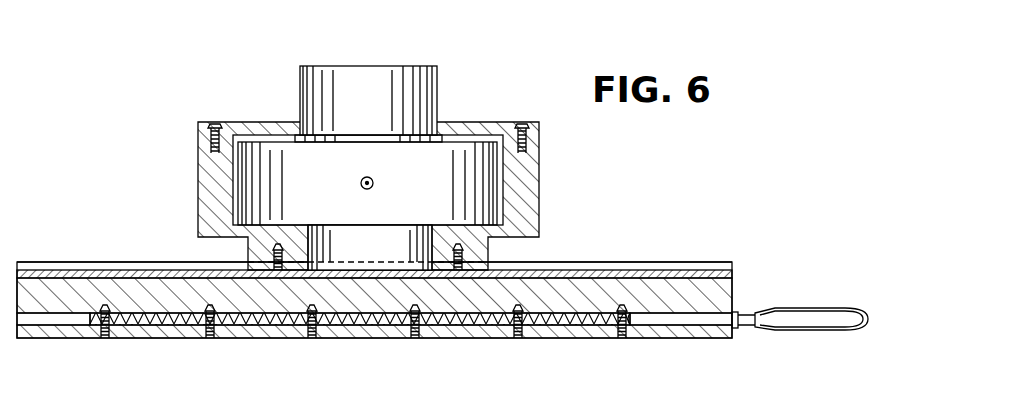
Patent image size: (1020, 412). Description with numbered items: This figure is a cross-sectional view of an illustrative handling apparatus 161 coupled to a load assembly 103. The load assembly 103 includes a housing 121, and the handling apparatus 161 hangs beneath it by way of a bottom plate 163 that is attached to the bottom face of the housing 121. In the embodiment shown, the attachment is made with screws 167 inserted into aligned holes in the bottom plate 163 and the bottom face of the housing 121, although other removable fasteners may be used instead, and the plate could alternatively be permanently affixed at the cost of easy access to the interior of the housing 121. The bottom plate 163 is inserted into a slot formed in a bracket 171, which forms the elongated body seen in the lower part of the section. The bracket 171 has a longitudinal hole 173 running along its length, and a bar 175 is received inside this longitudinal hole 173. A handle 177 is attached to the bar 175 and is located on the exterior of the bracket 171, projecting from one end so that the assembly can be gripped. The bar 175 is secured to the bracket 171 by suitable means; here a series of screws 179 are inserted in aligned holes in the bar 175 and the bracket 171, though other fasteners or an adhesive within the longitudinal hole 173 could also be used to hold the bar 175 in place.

The load assembly 103 is at (449, 93).
The housing 121 is at (361, 191).
The handling apparatus 161 is at (442, 305).
The bottom plate 163 is at (120, 270).
The screws 167 is at (265, 262).
The bracket 171 is at (75, 336).
The longitudinal hole 173 is at (640, 318).
The bar 175 is at (382, 322).
The handle 177 is at (808, 315).
The screws 179 is at (205, 336).